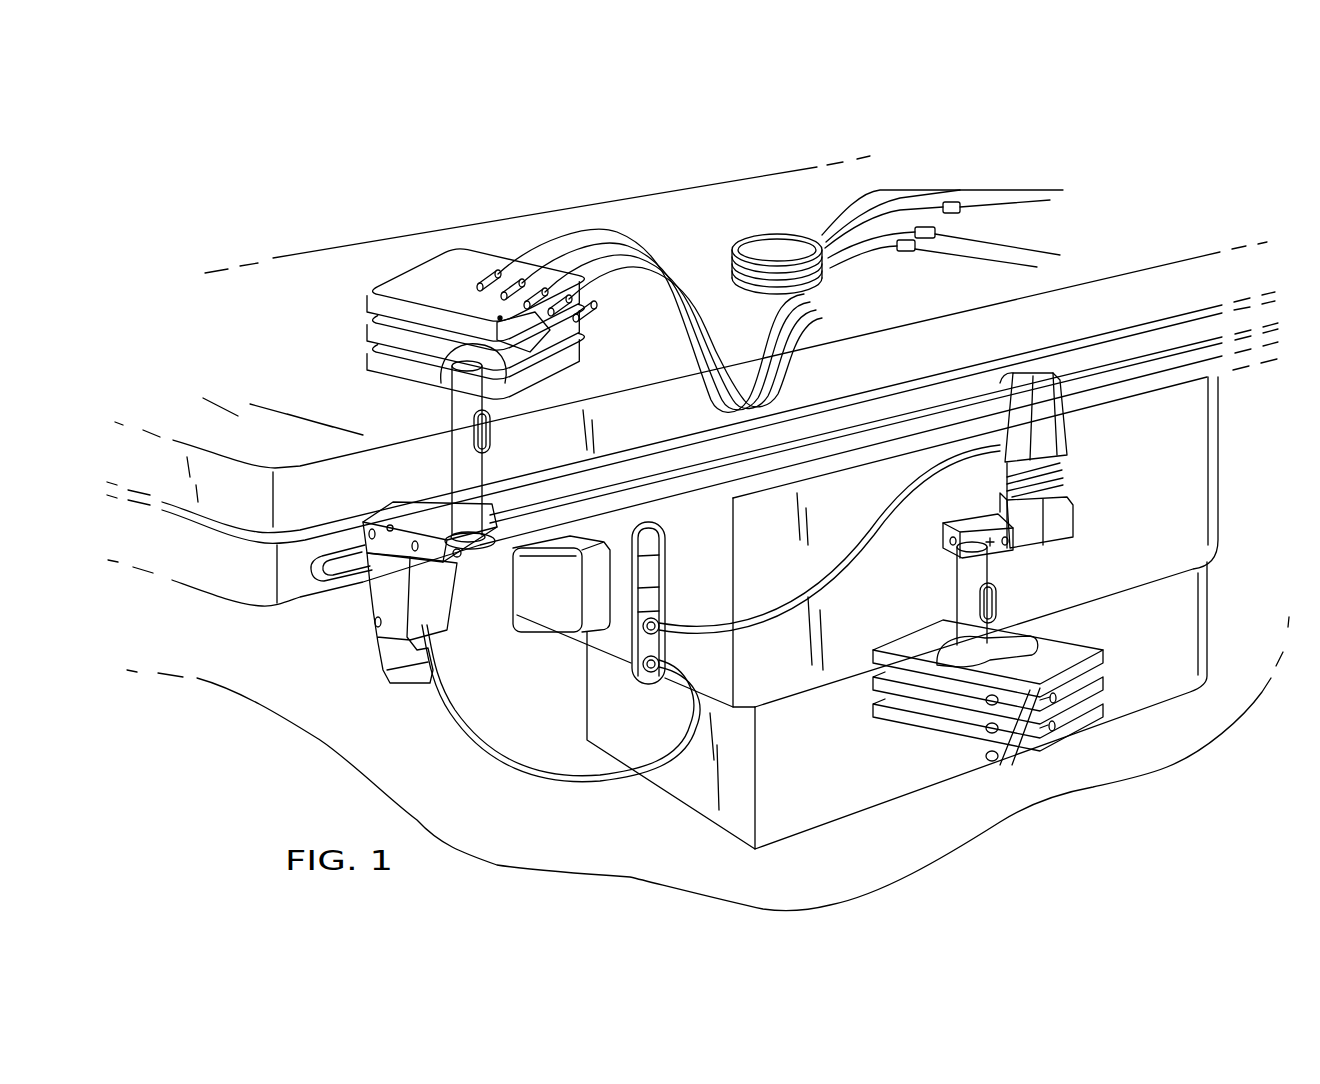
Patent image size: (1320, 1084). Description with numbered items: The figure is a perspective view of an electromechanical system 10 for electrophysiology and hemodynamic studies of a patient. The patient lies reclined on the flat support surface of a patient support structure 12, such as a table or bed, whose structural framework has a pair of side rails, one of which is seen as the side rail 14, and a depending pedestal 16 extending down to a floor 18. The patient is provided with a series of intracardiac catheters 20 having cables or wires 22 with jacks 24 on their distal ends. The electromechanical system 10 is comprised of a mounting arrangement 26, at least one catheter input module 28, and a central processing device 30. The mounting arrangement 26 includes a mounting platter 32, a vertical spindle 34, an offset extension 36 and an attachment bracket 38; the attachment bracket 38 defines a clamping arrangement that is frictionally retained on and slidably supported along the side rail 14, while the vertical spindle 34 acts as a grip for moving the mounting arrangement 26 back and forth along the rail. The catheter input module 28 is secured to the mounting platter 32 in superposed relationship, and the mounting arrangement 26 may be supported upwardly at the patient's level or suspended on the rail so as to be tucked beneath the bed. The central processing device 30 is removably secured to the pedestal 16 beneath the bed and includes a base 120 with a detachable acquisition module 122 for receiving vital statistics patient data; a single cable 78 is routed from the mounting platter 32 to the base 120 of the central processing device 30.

The electromechanical system 10 is at (690, 240).
The patient support structure 12 is at (1118, 300).
The side rail 14 is at (753, 467).
The pedestal 16 is at (830, 773).
The floor 18 is at (312, 712).
The intracardiac catheters 20 is at (900, 175).
The cables or wires 22 is at (820, 278).
The jacks 24 is at (520, 277).
The mounting arrangement 26 is at (445, 460).
The catheter input module 28 is at (414, 316).
The central processing device 30 is at (573, 667).
The mounting platter 32 is at (390, 358).
The vertical spindle 34 is at (460, 418).
The offset extension 36 is at (387, 608).
The attachment bracket 38 is at (1053, 427).
The single cable 78 is at (850, 540).
The base 120 is at (638, 693).
The acquisition module 122 is at (567, 582).